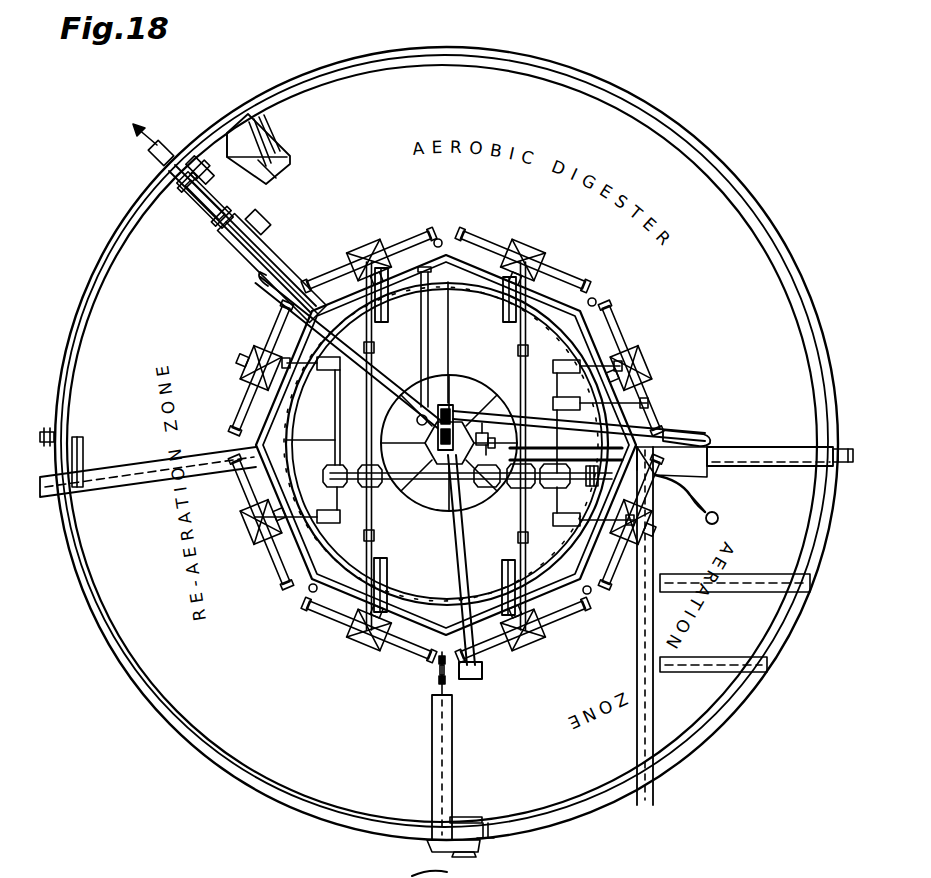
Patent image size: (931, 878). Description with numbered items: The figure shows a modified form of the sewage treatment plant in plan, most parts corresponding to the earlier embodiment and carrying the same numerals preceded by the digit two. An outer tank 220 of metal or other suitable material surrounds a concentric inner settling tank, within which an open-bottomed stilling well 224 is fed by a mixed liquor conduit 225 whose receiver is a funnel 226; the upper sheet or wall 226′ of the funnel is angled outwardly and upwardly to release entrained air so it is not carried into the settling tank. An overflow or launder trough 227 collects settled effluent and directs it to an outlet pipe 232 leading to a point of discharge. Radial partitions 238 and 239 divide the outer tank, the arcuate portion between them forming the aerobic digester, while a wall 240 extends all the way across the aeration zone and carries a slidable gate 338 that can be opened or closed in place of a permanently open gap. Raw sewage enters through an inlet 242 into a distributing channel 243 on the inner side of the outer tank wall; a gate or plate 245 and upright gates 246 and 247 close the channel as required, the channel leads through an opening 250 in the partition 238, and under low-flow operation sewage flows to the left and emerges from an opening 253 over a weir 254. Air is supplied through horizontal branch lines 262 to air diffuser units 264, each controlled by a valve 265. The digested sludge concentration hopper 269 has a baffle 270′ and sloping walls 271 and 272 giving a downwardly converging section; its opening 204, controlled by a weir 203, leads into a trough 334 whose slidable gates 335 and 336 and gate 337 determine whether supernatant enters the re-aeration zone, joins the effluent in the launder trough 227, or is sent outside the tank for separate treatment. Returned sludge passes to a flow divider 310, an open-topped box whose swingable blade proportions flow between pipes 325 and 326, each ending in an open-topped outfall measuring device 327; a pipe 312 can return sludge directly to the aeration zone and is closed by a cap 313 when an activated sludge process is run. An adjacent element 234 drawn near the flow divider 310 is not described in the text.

The weir 203 is at (218, 168).
The opening 204 is at (240, 178).
The outer tank 220 is at (722, 157).
The stilling well 224 is at (428, 438).
The mixed liquor conduit 225 is at (606, 443).
The funnel 226 is at (700, 477).
The upper wall of funnel 226′ is at (697, 460).
The launder trough 227 is at (256, 445).
The outlet pipe 232 is at (197, 465).
The conduit bundle 234 is at (455, 416).
The radial partition 238 is at (788, 446).
The radial partition 239 is at (245, 266).
The wall 240 is at (452, 697).
The inlet 242 is at (481, 849).
The raw sewage distributing channel 243 is at (578, 808).
The gate 245 is at (470, 815).
The upright gate 246 is at (490, 822).
The upright gate 247 is at (455, 832).
The opening in radial partition 250 is at (836, 445).
The opening 253 is at (78, 442).
The weir 254 is at (82, 458).
The horizontal branch lines 262 is at (514, 312).
The air diffuser unit 264 is at (425, 228).
The valve 265 is at (518, 348).
The digested sludge concentration hopper 269 is at (300, 165).
The baffle 270′ is at (268, 130).
The sloping wall 271 is at (290, 150).
The sloping wall 272 is at (285, 178).
The flow divider 310 is at (452, 405).
The pipe 312 is at (478, 535).
The cap 313 is at (482, 672).
The pipe 325 is at (385, 378).
The pipe 326 is at (553, 403).
The measuring device 327 is at (690, 428).
The trough 334 is at (252, 245).
The slidable gate 335 is at (187, 178).
The slidable gate 336 is at (258, 216).
The gate 337 is at (200, 212).
The slidable gate 338 is at (437, 672).